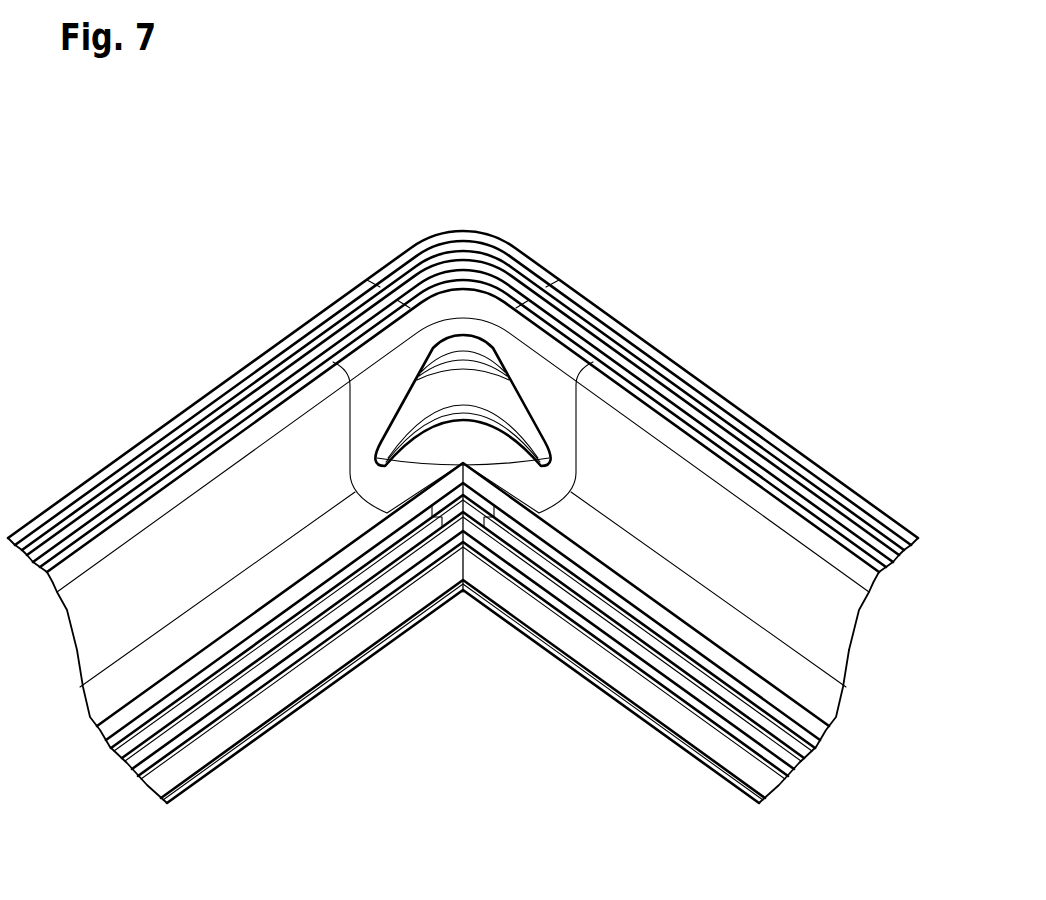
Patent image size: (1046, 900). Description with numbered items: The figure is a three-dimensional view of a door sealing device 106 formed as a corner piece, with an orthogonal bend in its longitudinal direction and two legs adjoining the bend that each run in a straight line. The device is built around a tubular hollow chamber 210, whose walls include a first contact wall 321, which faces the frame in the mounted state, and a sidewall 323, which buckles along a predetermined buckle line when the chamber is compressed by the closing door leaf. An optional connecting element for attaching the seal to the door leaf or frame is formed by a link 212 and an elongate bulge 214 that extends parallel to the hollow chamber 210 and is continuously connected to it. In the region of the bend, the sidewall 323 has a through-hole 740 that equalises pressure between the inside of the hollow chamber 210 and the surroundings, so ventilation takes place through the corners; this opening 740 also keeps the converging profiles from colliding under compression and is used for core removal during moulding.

The door sealing device 106 is at (690, 252).
The hollow chamber 210 is at (53, 522).
The link 212 is at (150, 662).
The elongate bulge 214 is at (159, 716).
The first contact wall 321 is at (904, 568).
The first sidewall 323 is at (855, 632).
The through-hole 740 is at (461, 382).